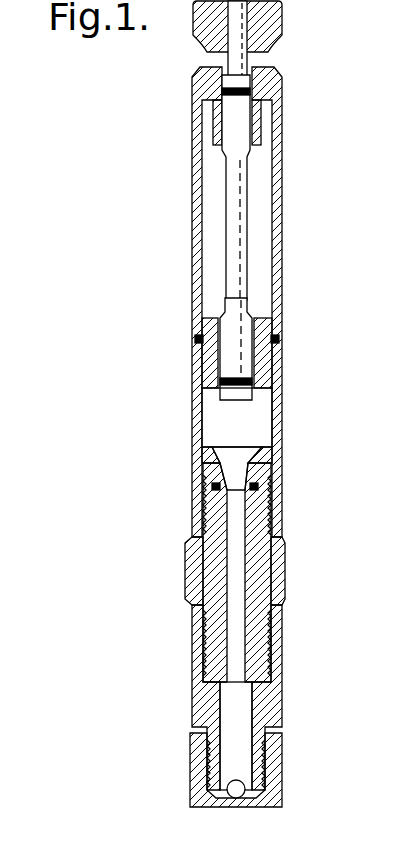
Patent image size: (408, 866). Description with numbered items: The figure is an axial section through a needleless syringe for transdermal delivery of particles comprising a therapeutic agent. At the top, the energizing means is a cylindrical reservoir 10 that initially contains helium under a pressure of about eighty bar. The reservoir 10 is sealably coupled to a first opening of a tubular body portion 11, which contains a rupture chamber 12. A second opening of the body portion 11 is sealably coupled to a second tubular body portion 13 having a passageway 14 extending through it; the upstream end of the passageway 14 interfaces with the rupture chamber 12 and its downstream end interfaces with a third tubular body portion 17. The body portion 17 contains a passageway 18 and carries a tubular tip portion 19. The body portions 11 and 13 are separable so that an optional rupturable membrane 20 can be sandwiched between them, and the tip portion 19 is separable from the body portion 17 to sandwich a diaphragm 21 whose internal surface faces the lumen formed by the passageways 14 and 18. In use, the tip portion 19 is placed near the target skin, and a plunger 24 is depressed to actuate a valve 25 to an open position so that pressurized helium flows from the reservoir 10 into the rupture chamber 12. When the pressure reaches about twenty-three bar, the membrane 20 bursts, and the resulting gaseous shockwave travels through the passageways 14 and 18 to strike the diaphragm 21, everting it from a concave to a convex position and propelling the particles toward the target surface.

The cylindrical reservoir 10 is at (260, 192).
The tubular body portion 11 is at (192, 420).
The rupture chamber 12 is at (248, 423).
The second tubular body portion 13 is at (267, 555).
The passageway 14 is at (235, 508).
The third tubular body portion 17 is at (193, 632).
The passageway 18 is at (232, 708).
The tubular tip portion 19 is at (278, 753).
The rupturable membrane 20 is at (257, 445).
The diaphragm 21 is at (195, 768).
The plunger 24 is at (264, 18).
The valve 25 is at (260, 362).